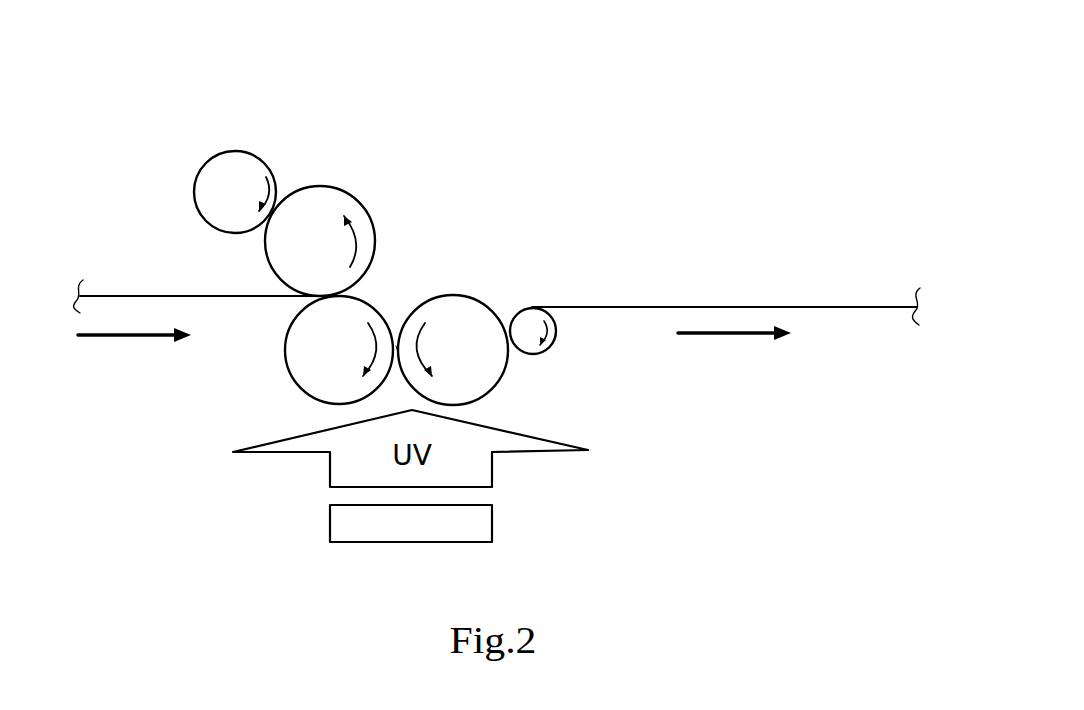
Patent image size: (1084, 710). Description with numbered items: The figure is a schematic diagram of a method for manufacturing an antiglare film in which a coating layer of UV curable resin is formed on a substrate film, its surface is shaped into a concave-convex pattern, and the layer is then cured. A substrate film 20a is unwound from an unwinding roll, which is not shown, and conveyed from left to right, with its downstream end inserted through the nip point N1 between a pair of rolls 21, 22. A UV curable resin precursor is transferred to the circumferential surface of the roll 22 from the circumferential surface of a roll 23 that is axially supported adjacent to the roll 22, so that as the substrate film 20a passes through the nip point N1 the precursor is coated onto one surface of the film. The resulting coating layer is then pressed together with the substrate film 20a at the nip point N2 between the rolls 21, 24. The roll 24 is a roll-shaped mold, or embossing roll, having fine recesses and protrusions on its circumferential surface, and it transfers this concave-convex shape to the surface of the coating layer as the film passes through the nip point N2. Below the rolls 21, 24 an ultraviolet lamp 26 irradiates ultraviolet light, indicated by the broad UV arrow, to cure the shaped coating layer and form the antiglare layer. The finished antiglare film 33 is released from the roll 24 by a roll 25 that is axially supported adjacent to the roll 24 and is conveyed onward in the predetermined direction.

The substrate film 20a is at (128, 295).
The roll 21 is at (293, 355).
The roll 22 is at (317, 198).
The roll 23 is at (233, 162).
The roll-shaped mold (embossing roll) 24 is at (503, 368).
The roll 25 is at (558, 331).
The ultraviolet lamp 26 is at (492, 520).
The antiglare film 33 is at (867, 308).
The nip point N1 is at (340, 296).
The nip point N2 is at (398, 338).